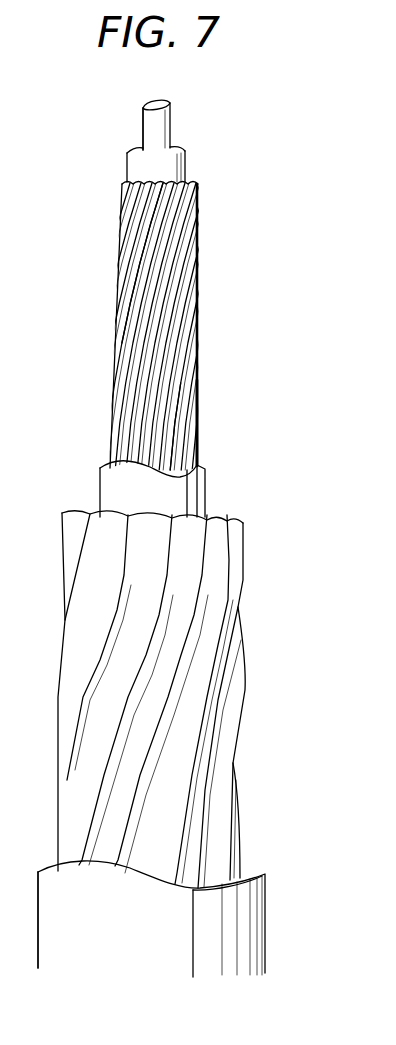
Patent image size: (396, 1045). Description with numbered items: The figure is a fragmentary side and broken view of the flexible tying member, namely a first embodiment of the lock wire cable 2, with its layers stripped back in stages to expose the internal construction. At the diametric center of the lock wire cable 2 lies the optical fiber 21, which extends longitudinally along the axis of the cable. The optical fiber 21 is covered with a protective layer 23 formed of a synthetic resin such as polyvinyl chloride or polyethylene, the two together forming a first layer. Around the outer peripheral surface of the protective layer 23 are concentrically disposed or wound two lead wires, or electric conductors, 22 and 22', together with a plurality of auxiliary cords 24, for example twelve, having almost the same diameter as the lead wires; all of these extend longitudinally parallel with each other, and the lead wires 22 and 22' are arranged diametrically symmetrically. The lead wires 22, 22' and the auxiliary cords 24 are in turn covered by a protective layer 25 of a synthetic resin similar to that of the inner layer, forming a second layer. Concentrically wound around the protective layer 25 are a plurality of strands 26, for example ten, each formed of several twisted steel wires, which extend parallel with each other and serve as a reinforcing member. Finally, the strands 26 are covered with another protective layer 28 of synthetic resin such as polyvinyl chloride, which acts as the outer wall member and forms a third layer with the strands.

The lock wire cable 2 is at (281, 272).
The optical fiber 21 is at (157, 122).
The protective layer 23 is at (175, 162).
The lead wire 22 is at (172, 326).
The lead wire 22' is at (208, 425).
The auxiliary cords 24 is at (180, 348).
The protective layer 25 is at (190, 495).
The strands 26 is at (68, 560).
The protective layer 28 is at (253, 919).